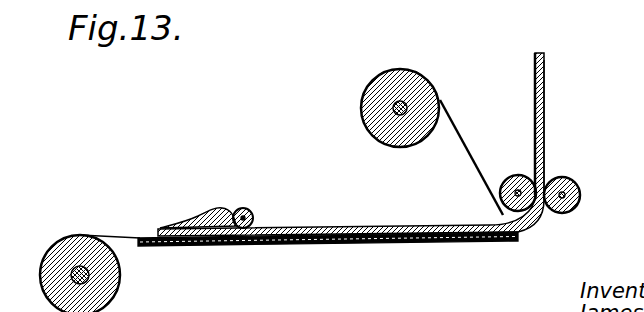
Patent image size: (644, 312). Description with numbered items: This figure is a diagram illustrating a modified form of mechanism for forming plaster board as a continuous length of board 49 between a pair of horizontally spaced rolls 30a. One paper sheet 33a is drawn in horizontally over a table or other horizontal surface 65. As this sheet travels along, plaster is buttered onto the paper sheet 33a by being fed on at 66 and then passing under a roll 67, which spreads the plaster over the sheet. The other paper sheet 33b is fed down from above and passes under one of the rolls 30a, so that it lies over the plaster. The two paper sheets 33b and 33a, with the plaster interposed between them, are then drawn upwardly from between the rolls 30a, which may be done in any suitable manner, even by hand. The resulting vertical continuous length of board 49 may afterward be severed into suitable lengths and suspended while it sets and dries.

The continuous length of board 49 is at (548, 90).
The paper sheet 33a is at (118, 236).
The paper sheet 33b is at (535, 97).
The horizontally spaced rolls 30a is at (514, 177).
The table or horizontal surface 65 is at (290, 246).
The plaster feed 66 is at (210, 216).
The roll 67 is at (247, 210).